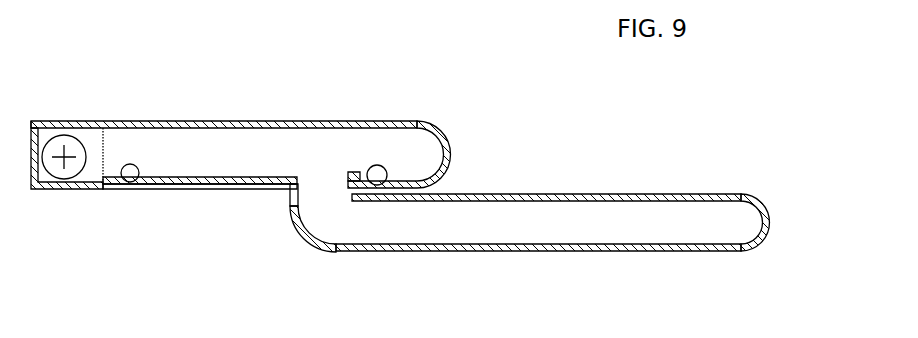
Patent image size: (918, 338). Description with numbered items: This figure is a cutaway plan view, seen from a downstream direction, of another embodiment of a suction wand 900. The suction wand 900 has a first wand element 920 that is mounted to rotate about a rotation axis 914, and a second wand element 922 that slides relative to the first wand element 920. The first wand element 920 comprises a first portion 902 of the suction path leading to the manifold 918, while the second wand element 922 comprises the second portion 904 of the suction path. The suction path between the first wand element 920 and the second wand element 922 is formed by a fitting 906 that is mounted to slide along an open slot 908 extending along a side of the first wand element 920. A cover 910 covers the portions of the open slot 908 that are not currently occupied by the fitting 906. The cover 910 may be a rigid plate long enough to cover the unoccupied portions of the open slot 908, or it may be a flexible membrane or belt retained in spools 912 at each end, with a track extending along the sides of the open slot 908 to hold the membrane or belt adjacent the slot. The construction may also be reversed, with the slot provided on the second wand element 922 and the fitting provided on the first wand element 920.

The suction wand 900 is at (470, 80).
The first portion of the suction path 902 is at (200, 137).
The second housing portion 904 is at (491, 212).
The fitting 906 is at (322, 190).
The open slot 908 is at (240, 184).
The cover 910 is at (193, 189).
The spools 912 is at (381, 166).
The rotation axis 914 is at (64, 136).
The manifold 918 is at (80, 124).
The first wand element 920 is at (310, 122).
The second wand element 922 is at (542, 194).